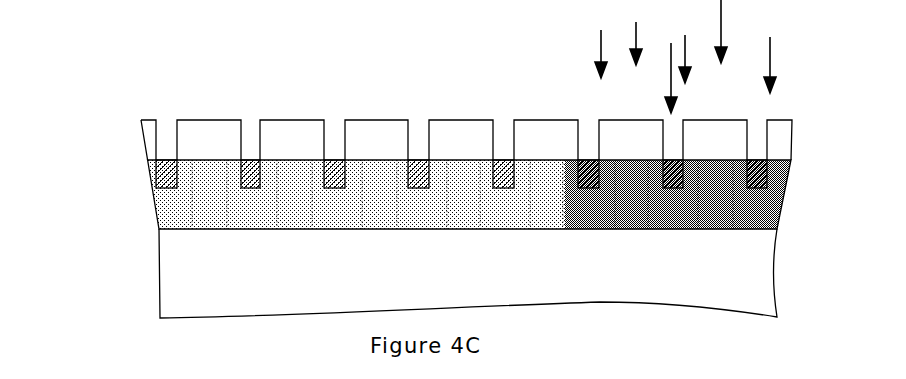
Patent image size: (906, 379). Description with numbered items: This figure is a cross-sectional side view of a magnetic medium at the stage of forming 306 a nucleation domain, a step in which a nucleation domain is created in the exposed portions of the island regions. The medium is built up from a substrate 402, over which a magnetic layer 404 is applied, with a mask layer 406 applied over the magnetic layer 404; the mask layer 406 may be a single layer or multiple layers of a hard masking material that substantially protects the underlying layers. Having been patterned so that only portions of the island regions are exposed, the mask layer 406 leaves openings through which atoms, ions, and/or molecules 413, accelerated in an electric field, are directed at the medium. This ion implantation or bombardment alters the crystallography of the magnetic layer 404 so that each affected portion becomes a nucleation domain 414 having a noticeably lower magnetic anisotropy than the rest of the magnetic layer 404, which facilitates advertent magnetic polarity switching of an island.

The forming a nucleation domain 306 is at (90, 70).
The substrate 402 is at (170, 273).
The magnetic layer 404 is at (132, 160).
The mask layer 406 is at (130, 122).
The atoms, ions, and/or molecules 413 is at (688, 30).
The nucleation domain 414 is at (590, 165).